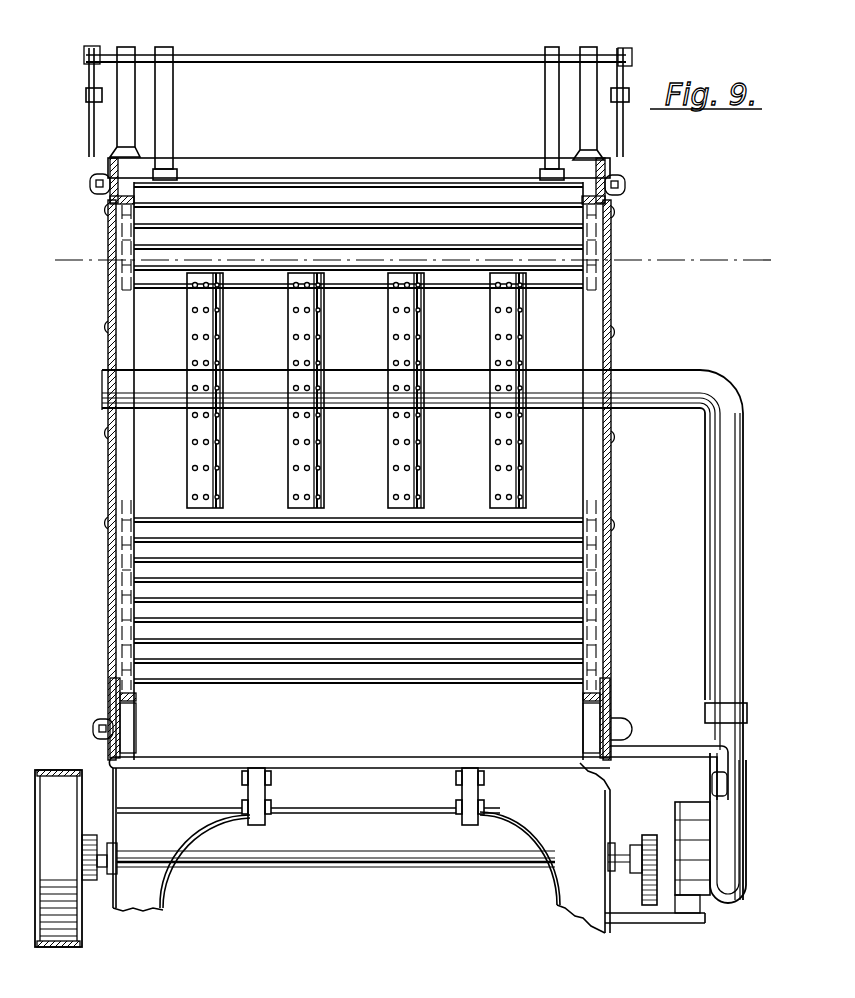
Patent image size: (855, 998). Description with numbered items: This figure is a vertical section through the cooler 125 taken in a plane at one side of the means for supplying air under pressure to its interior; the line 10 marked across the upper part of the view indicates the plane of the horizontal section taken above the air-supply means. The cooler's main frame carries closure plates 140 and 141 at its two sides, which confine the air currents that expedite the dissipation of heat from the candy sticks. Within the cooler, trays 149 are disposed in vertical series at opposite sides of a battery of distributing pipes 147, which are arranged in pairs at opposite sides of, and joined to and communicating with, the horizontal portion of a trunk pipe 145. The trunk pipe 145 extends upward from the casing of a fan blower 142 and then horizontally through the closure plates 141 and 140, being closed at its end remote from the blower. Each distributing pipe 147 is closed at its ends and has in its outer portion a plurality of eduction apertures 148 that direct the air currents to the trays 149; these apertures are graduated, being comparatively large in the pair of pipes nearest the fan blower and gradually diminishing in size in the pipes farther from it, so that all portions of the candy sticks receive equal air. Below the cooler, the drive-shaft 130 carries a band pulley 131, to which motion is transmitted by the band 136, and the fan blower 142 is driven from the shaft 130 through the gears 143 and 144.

The section line 10 is at (414, 260).
The cooler 125 is at (358, 48).
The drive-shaft 130 is at (384, 864).
The band pulley 131 is at (73, 930).
The band 136 is at (53, 770).
The closure plate 140 is at (108, 293).
The closure plate 141 is at (612, 295).
The fan blower 142 is at (733, 869).
The gear 143 is at (648, 835).
The gear 144 is at (652, 906).
The trunk pipe 145 is at (718, 591).
The distributing pipe 147 is at (298, 325).
The eduction aperture 148 is at (297, 442).
The tray 149 is at (325, 204).